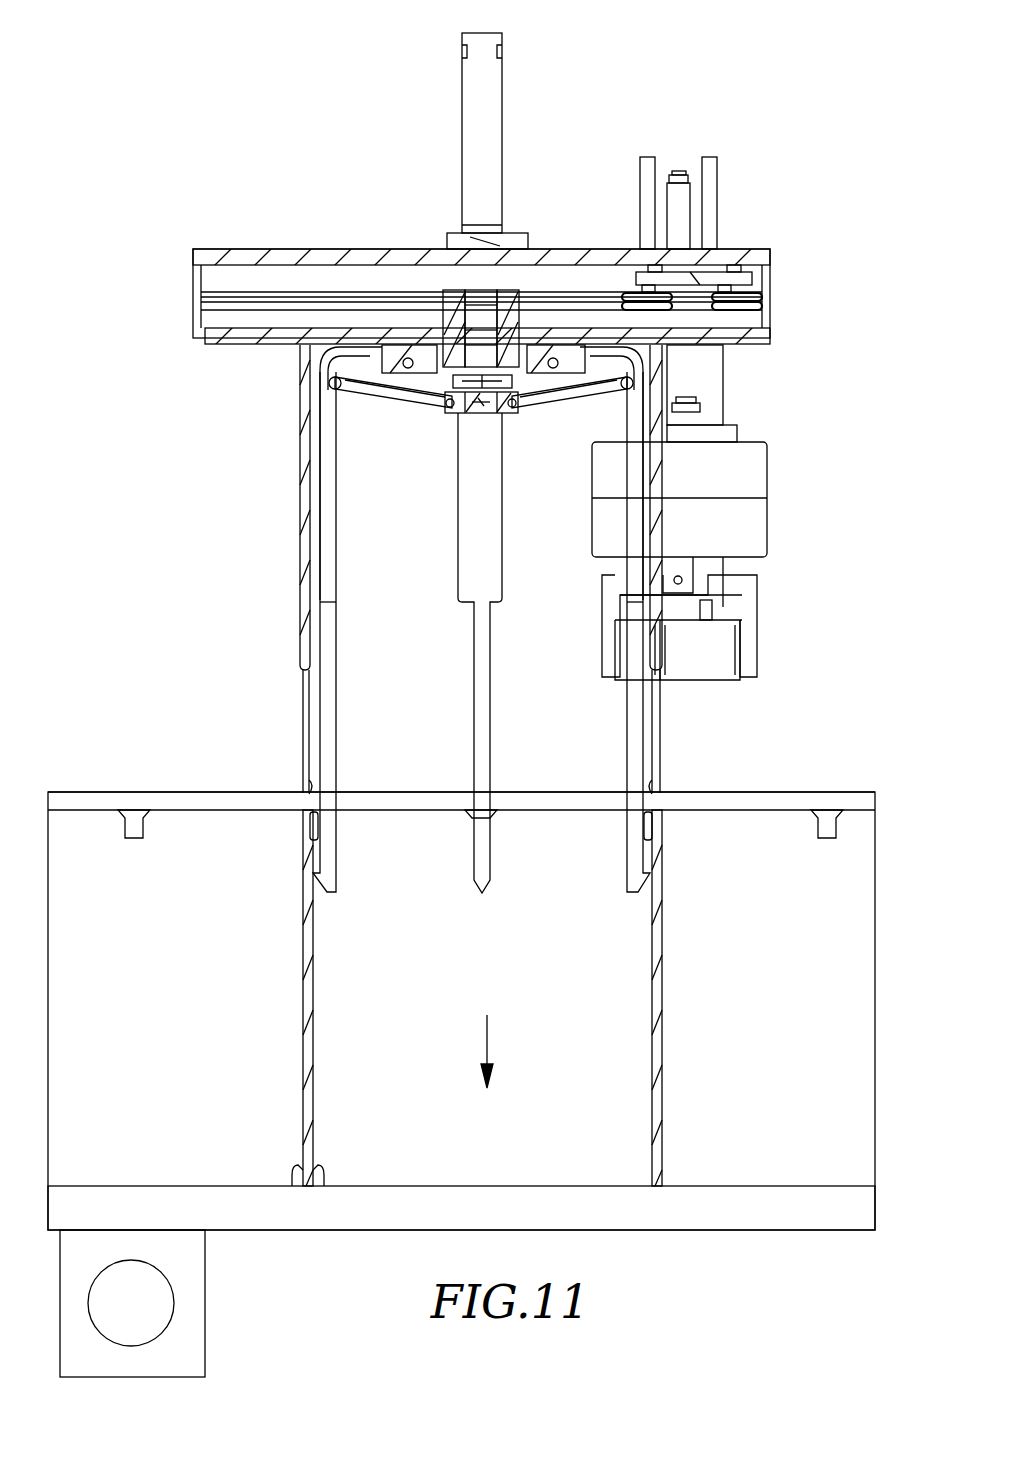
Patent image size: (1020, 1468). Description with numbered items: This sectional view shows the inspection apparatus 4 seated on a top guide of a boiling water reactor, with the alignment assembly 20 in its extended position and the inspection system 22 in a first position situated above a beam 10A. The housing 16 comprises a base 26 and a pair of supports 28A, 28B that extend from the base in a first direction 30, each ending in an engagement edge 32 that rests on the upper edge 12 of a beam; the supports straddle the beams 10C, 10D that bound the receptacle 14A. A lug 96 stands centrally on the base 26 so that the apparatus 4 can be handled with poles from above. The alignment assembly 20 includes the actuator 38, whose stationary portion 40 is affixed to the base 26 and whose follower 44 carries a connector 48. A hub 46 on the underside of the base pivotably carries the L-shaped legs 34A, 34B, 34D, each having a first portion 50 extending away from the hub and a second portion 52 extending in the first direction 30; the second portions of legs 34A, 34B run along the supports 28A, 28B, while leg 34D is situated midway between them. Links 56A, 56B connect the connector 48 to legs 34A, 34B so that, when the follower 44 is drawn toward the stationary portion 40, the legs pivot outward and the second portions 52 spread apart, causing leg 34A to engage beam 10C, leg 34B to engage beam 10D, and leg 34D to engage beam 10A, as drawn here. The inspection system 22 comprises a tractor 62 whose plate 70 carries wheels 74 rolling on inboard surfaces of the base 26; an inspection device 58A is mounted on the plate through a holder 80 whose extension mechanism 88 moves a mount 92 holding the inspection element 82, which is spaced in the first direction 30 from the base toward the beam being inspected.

The apparatus 4 is at (592, 82).
The lug 96 is at (500, 88).
The extension mechanism 88 is at (680, 178).
The housing 16 is at (200, 240).
The base 26 is at (242, 249).
The actuator 38 is at (432, 292).
The stationary portion 40 is at (452, 290).
The wheels 74 is at (628, 294).
The plate 70 is at (680, 283).
The tractor 62 is at (738, 262).
The first portion 50 is at (362, 350).
The hub 46 is at (548, 385).
The connector 48 is at (455, 417).
The follower 44 is at (500, 416).
The link 56A is at (540, 410).
The link 56B is at (398, 397).
The alignment assembly 20 is at (481, 569).
The support 28A is at (663, 712).
The support 28B is at (303, 690).
The second portion 52 is at (481, 633).
The leg 34A is at (620, 842).
The leg 34B is at (340, 842).
The leg 34D is at (476, 850).
The inspection system 22 is at (738, 476).
The holder 80 is at (780, 452).
The inspection device 58A is at (798, 526).
The mount 92 is at (757, 597).
The inspection element 82 is at (722, 680).
The beam 10A is at (787, 797).
The beam 10C is at (652, 990).
The beam 10D is at (313, 985).
The upper edge 12 is at (316, 795).
The receptacle 14A is at (582, 1160).
The engagement edge 32 is at (314, 830).
The first direction 30 is at (487, 1033).